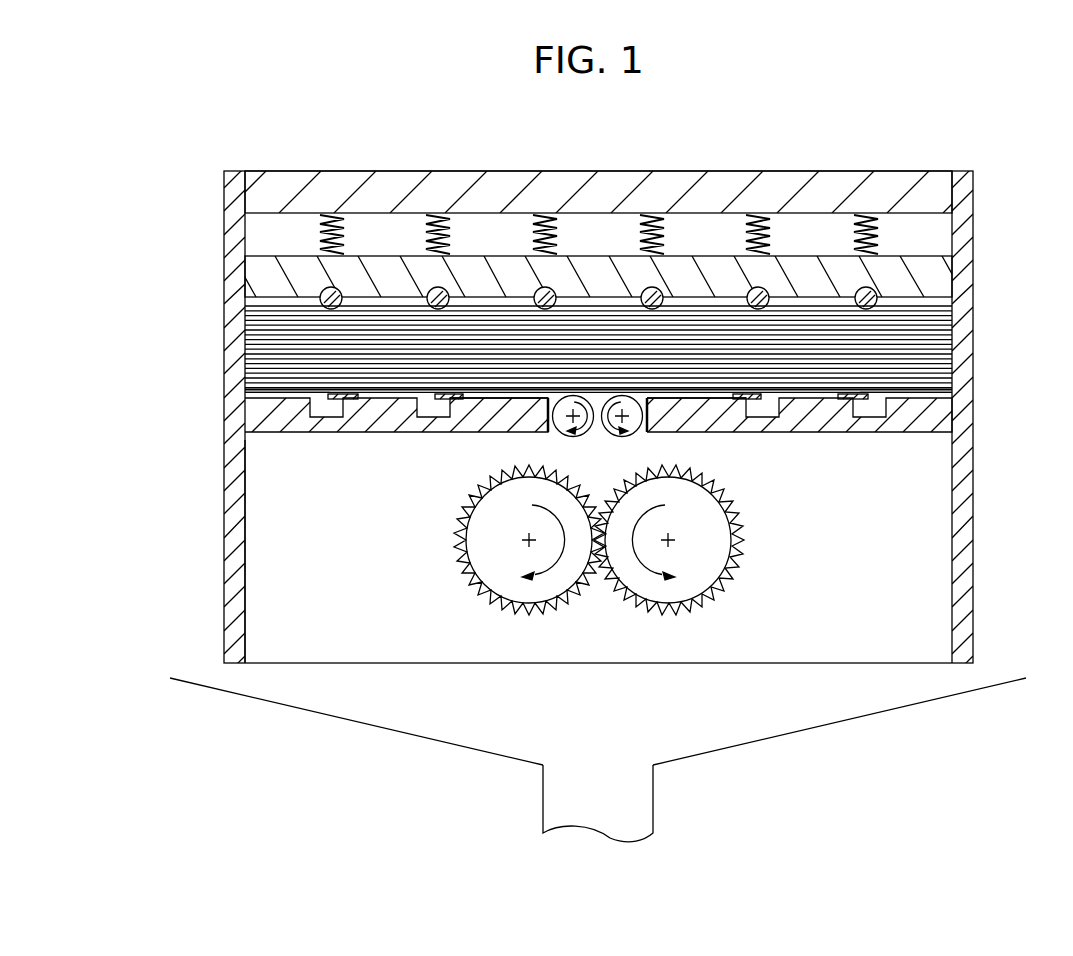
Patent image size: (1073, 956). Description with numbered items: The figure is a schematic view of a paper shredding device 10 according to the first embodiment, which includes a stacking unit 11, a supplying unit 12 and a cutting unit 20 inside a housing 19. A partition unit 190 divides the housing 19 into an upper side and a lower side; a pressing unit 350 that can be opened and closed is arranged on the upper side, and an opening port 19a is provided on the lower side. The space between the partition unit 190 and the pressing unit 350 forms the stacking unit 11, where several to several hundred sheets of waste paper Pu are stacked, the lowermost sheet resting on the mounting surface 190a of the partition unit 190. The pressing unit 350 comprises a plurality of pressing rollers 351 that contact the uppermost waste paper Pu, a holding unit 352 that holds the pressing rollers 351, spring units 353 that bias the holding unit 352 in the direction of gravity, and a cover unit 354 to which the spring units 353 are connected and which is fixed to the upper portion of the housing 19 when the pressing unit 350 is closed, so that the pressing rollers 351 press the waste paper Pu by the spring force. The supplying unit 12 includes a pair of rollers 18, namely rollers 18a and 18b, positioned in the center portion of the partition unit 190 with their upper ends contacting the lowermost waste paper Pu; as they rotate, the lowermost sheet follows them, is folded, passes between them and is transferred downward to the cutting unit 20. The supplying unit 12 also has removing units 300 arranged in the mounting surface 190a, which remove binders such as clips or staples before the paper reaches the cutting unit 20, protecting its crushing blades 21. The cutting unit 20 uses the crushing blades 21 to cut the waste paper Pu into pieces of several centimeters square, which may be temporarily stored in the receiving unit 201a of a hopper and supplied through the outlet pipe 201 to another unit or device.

The paper shredding device 10 is at (962, 114).
The stacking unit 11 is at (315, 372).
The supplying unit 12 is at (882, 375).
The pair of rollers 18 is at (587, 445).
The roller 18a is at (637, 437).
The roller 18b is at (553, 442).
The housing 19 is at (233, 517).
The opening port 19a is at (245, 615).
The cutting unit 20 is at (598, 560).
The crushing blades 21 is at (487, 563).
The partition unit 190 is at (268, 405).
The mounting surface 190a is at (512, 398).
The pipe 201 is at (635, 805).
The receiving unit 201a is at (825, 710).
The removing units 300 is at (340, 400).
The pressing unit 350 is at (594, 199).
The pressing rollers 351 is at (405, 257).
The holding unit 352 is at (270, 275).
The spring units 353 is at (453, 225).
The cover unit 354 is at (265, 190).
The waste paper Pu is at (938, 340).